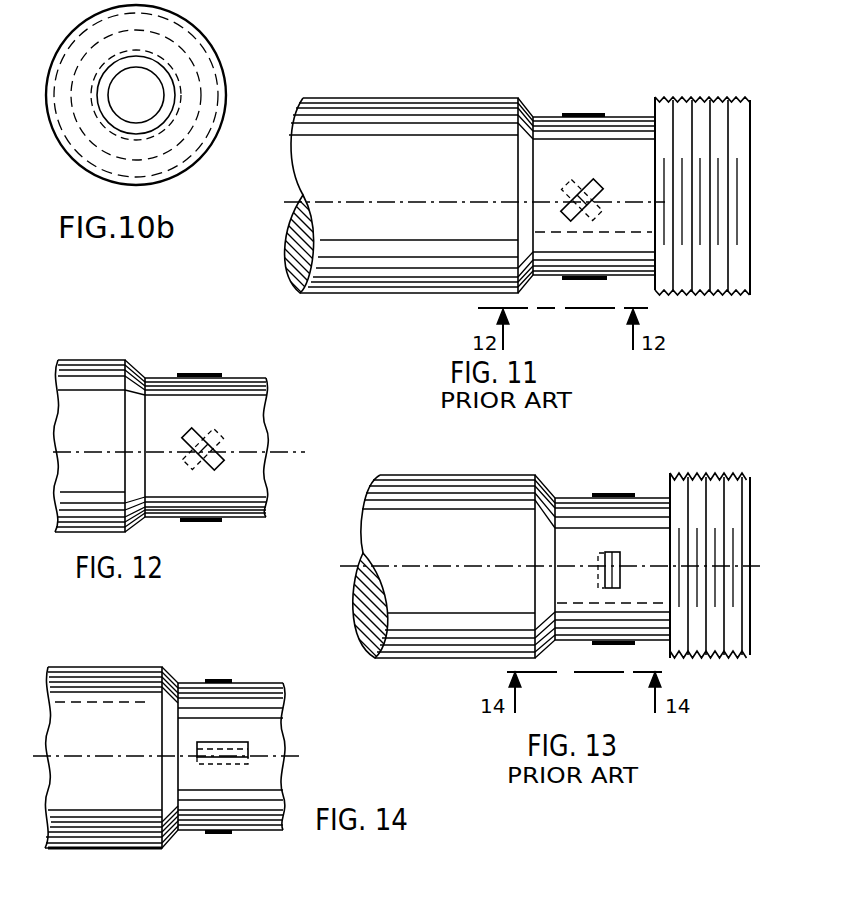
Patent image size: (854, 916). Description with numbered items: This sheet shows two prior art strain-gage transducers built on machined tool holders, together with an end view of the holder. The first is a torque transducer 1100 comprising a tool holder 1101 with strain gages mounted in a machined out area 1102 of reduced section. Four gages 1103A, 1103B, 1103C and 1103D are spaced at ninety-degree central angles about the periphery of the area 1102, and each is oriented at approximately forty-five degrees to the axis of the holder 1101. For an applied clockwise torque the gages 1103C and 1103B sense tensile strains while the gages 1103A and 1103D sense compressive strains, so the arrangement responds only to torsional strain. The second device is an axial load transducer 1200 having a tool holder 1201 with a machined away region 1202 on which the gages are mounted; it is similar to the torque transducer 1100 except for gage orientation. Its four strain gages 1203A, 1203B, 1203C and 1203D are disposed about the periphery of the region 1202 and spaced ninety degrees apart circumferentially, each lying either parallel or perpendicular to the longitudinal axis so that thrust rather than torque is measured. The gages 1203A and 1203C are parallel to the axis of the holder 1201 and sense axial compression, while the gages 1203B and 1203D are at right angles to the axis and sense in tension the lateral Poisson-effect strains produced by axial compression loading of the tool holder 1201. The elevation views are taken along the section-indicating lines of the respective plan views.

In FIG. 11, the torque transducer 1100 is at (544, 102).
In FIG. 12, the torque transducer 1100 is at (256, 370).
In FIG. 11, the tool holder 1101 is at (375, 193).
In FIG. 12, the tool holder 1101 is at (85, 533).
In FIG. 11, the machined out area 1102 is at (636, 117).
In FIG. 12, the machined out area 1102 is at (162, 376).
In FIG. 11, the strain gage 1103A is at (584, 115).
In FIG. 12, the strain gage 1103A is at (213, 437).
In FIG. 11, the strain gage 1103B is at (592, 212).
In FIG. 12, the strain gage 1103B is at (195, 522).
In FIG. 11, the strain gage 1103C is at (591, 186).
In FIG. 12, the strain gage 1103C is at (200, 373).
In FIG. 11, the strain gage 1103D is at (588, 282).
In FIG. 12, the strain gage 1103D is at (186, 441).
In FIG. 13, the axial load transducer 1200 is at (569, 489).
In FIG. 14, the axial load transducer 1200 is at (188, 675).
In FIG. 13, the tool holder 1201 is at (462, 560).
In FIG. 14, the tool holder 1201 is at (120, 848).
In FIG. 13, the machined away region 1202 is at (652, 497).
In FIG. 14, the machined away region 1202 is at (190, 831).
In FIG. 13, the strain gage 1203A is at (606, 494).
In FIG. 14, the strain gage 1203A is at (247, 763).
In FIG. 13, the strain gage 1203B is at (622, 538).
In FIG. 14, the strain gage 1203B is at (218, 680).
In FIG. 13, the strain gage 1203C is at (618, 646).
In FIG. 14, the strain gage 1203C is at (203, 742).
In FIG. 13, the strain gage 1203D is at (598, 571).
In FIG. 14, the strain gage 1203D is at (218, 834).